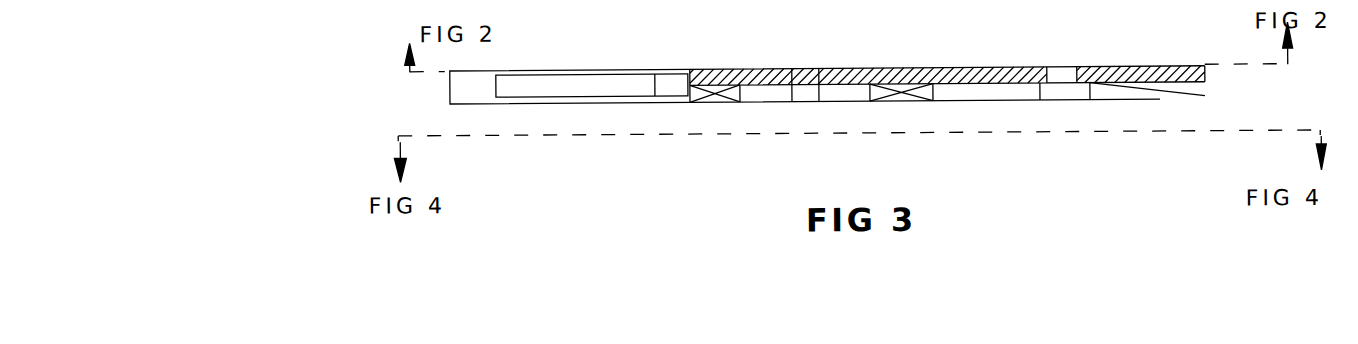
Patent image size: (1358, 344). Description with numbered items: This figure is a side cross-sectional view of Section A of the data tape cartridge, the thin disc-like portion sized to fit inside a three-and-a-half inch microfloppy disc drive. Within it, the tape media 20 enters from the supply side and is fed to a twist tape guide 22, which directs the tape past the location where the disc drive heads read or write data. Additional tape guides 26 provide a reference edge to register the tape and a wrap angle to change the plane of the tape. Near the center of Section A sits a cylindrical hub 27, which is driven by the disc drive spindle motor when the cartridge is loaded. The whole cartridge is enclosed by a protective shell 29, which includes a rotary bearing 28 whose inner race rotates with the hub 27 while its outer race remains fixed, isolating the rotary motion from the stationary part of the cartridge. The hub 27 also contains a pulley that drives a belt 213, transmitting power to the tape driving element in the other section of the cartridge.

The tape media 20 is at (1193, 105).
The twist tape guide 22 is at (617, 88).
The tape guide 26 is at (1042, 106).
The cylindrical hub 27 is at (848, 96).
The rotary bearing 28 is at (910, 106).
The protective shell 29 is at (450, 106).
The belt 213 is at (1158, 71).